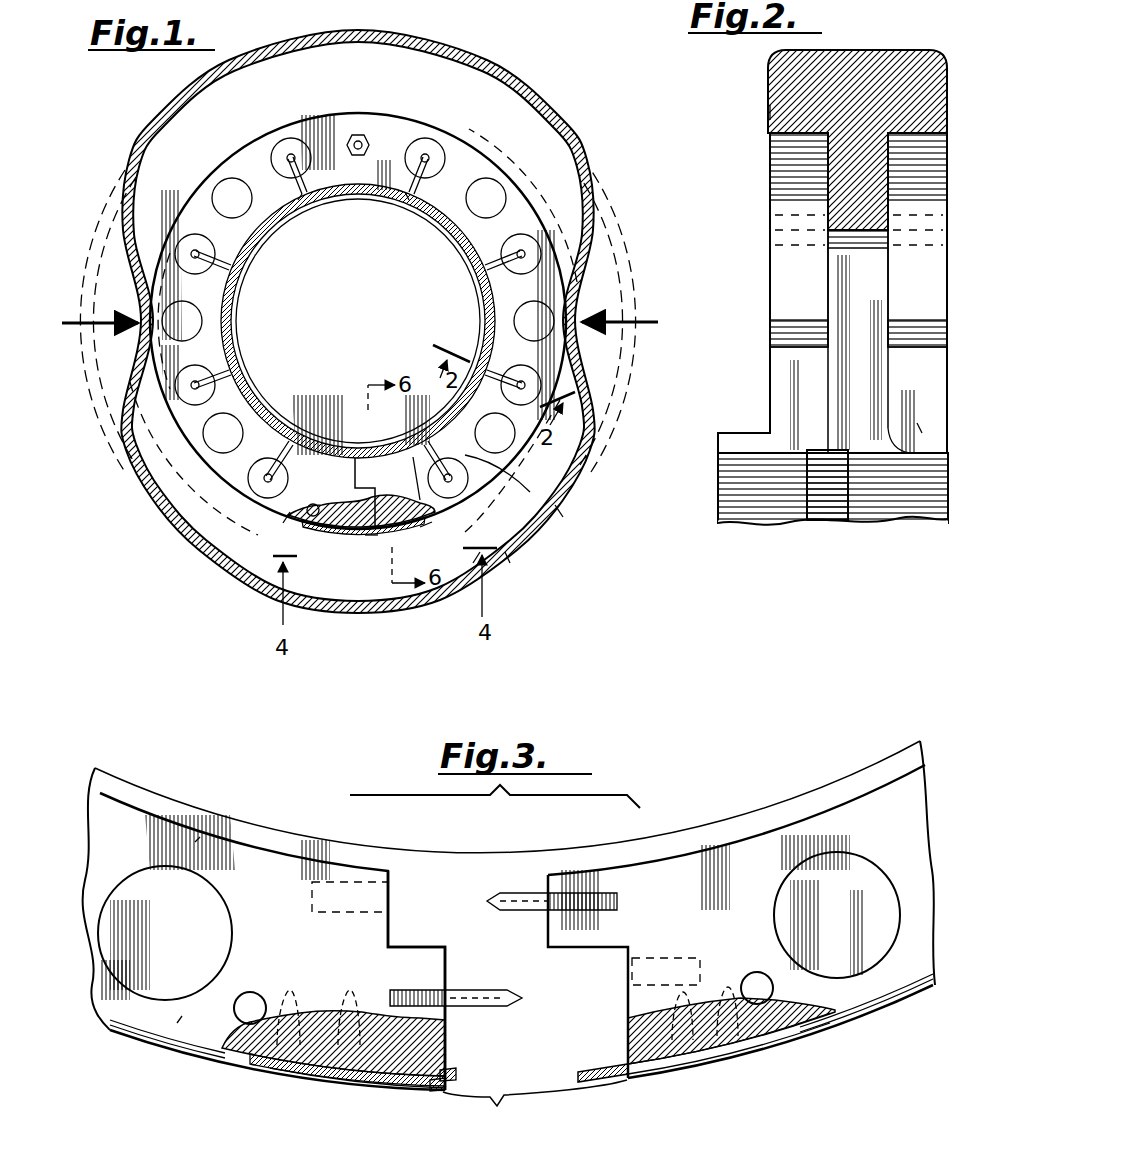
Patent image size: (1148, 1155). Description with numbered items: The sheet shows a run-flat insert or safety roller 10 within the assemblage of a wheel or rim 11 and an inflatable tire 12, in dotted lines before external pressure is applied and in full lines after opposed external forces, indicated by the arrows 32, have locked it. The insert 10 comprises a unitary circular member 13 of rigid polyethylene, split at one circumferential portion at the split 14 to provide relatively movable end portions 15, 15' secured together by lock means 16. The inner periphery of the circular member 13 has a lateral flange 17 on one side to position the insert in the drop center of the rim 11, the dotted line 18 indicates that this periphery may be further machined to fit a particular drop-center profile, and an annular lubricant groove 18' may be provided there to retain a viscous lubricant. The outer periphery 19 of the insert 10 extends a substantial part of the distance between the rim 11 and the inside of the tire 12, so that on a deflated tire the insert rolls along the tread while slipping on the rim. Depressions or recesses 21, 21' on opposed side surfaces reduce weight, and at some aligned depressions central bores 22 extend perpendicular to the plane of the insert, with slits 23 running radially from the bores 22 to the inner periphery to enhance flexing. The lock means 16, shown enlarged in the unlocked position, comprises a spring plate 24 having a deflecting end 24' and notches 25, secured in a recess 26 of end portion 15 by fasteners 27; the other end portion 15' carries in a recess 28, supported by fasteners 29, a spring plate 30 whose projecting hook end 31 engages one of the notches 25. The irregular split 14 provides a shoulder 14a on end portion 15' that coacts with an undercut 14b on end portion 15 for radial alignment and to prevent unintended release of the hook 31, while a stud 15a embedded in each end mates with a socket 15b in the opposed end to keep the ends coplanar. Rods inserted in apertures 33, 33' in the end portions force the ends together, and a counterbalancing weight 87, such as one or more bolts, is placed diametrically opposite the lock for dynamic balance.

In FIG. 1, the run-flat insert 10 is at (463, 127).
In FIG. 2, the run-flat insert 10 is at (940, 46).
In FIG. 1, the wheel rim 11 is at (347, 193).
In FIG. 1, the inflatable tire 12 is at (527, 84).
In FIG. 1, the circular member 13 is at (367, 113).
In FIG. 2, the circular member 13 is at (770, 110).
In FIG. 3, the circular member 13 is at (200, 837).
In FIG. 1, the split 14 is at (362, 455).
In FIG. 3, the shoulder 14a is at (555, 953).
In FIG. 3, the undercut 14b is at (410, 952).
In FIG. 1, the end portion 15 is at (200, 576).
In FIG. 3, the end portion 15 is at (148, 1058).
In FIG. 1, the end portion 15' is at (494, 594).
In FIG. 3, the end portion 15' is at (866, 1019).
In FIG. 3, the stud 15a is at (518, 893).
In FIG. 3, the socket 15b is at (337, 890).
In FIG. 1, the lock means 16 is at (370, 537).
In FIG. 3, the lock means 16 is at (535, 1106).
In FIG. 1, the lateral flange 17 is at (487, 300).
In FIG. 2, the lateral flange 17 is at (717, 447).
In FIG. 3, the lateral flange 17 is at (773, 810).
In FIG. 2, the dotted line 18 is at (952, 421).
In FIG. 2, the annular lubricant groove 18' is at (830, 455).
In FIG. 1, the outer periphery 19 is at (563, 517).
In FIG. 2, the outer periphery 19 is at (860, 50).
In FIG. 3, the outer periphery 19 is at (112, 1036).
In FIG. 1, the depressions 21 is at (358, 258).
In FIG. 2, the depressions 21 is at (776, 240).
In FIG. 3, the depressions 21 is at (499, 906).
In FIG. 2, the depressions 21' is at (938, 240).
In FIG. 1, the central bores 22 is at (270, 160).
In FIG. 2, the central bores 22 is at (840, 250).
In FIG. 1, the slits 23 is at (515, 254).
In FIG. 2, the slits 23 is at (878, 372).
In FIG. 1, the spring plate 24 is at (361, 540).
In FIG. 3, the spring plate 24 is at (333, 1069).
In FIG. 3, the deflecting end 24' is at (468, 1049).
In FIG. 3, the notches 25 is at (420, 1086).
In FIG. 3, the recess 26 is at (290, 1076).
In FIG. 3, the fasteners 27 is at (345, 992).
In FIG. 3, the recess 28 is at (743, 1072).
In FIG. 3, the fasteners 29 is at (700, 1073).
In FIG. 1, the spring plate 30 is at (430, 527).
In FIG. 3, the spring plate 30 is at (653, 1075).
In FIG. 3, the hook end 31 is at (592, 1066).
In FIG. 1, the arrows 32 is at (80, 318).
In FIG. 1, the aperture 33 is at (242, 548).
In FIG. 3, the aperture 33 is at (213, 1044).
In FIG. 1, the aperture 33' is at (407, 449).
In FIG. 3, the aperture 33' is at (795, 1031).
In FIG. 1, the counterbalancing weight 87 is at (356, 136).